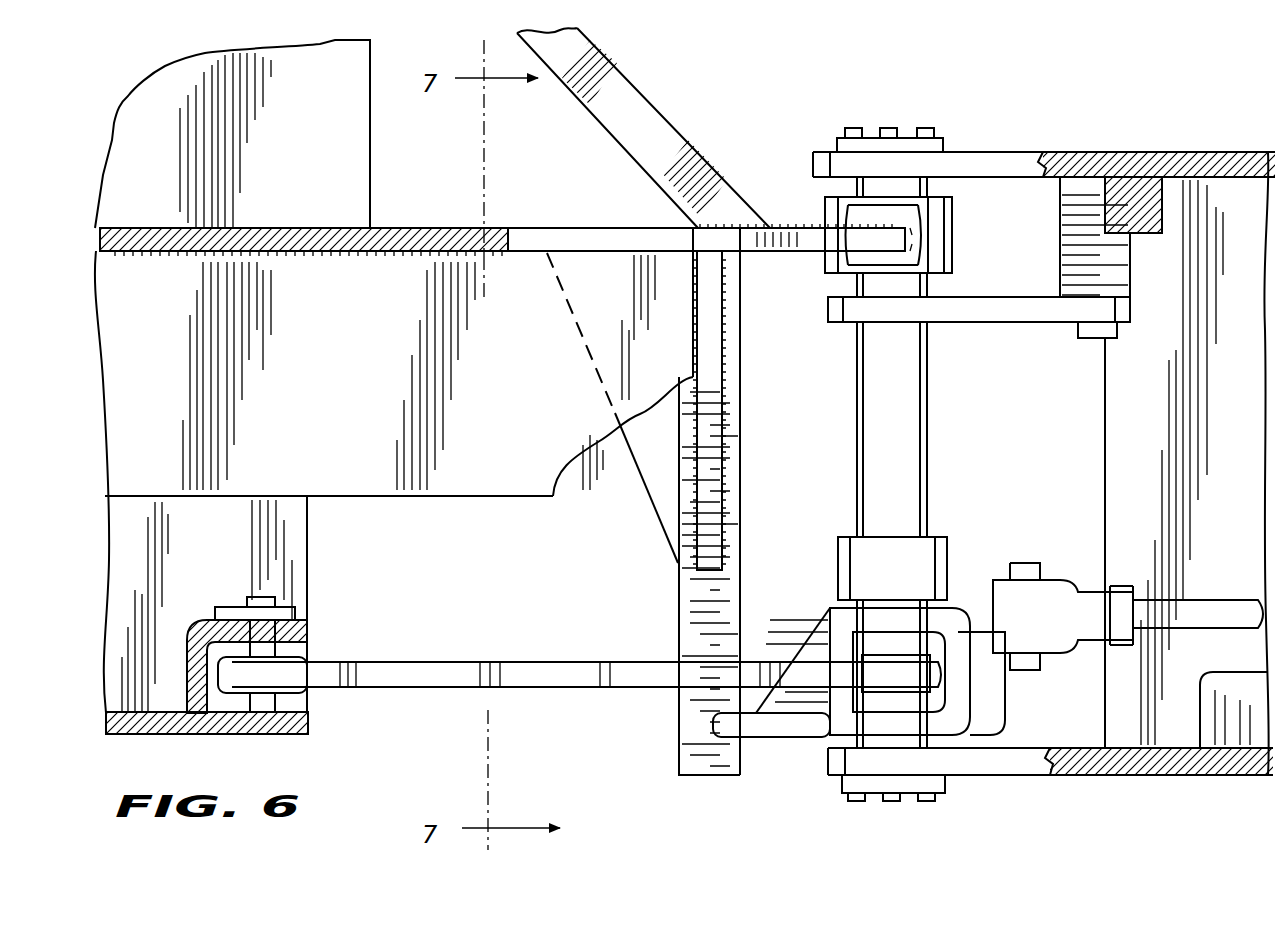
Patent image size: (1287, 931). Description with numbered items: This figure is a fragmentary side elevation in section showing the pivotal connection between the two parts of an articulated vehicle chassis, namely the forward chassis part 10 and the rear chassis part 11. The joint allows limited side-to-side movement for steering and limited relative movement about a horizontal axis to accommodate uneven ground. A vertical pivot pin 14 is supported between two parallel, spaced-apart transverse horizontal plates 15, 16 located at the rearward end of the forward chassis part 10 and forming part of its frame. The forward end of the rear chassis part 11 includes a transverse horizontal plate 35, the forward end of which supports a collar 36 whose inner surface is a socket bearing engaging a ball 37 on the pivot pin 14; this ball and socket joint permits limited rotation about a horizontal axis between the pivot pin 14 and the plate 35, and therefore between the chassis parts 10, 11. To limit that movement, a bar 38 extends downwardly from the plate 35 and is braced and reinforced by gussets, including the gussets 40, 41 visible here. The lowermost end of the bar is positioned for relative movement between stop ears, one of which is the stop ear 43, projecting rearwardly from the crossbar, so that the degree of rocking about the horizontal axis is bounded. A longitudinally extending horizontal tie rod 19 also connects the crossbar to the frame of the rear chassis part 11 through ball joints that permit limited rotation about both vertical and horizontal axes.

The forward chassis part 10 is at (1152, 150).
The rear chassis part 11 is at (398, 226).
The vertical pivot pin 14 is at (910, 442).
The transverse horizontal plate 15 is at (1003, 152).
The transverse horizontal plate 16 is at (1028, 775).
The tie rod 19 is at (548, 690).
The transverse horizontal plate 35 is at (608, 230).
The collar 36 is at (825, 266).
The ball 37 is at (955, 250).
The bar 38 is at (690, 608).
The gusset 40 is at (712, 495).
The gusset 41 is at (665, 522).
The stop ear 43 is at (712, 727).